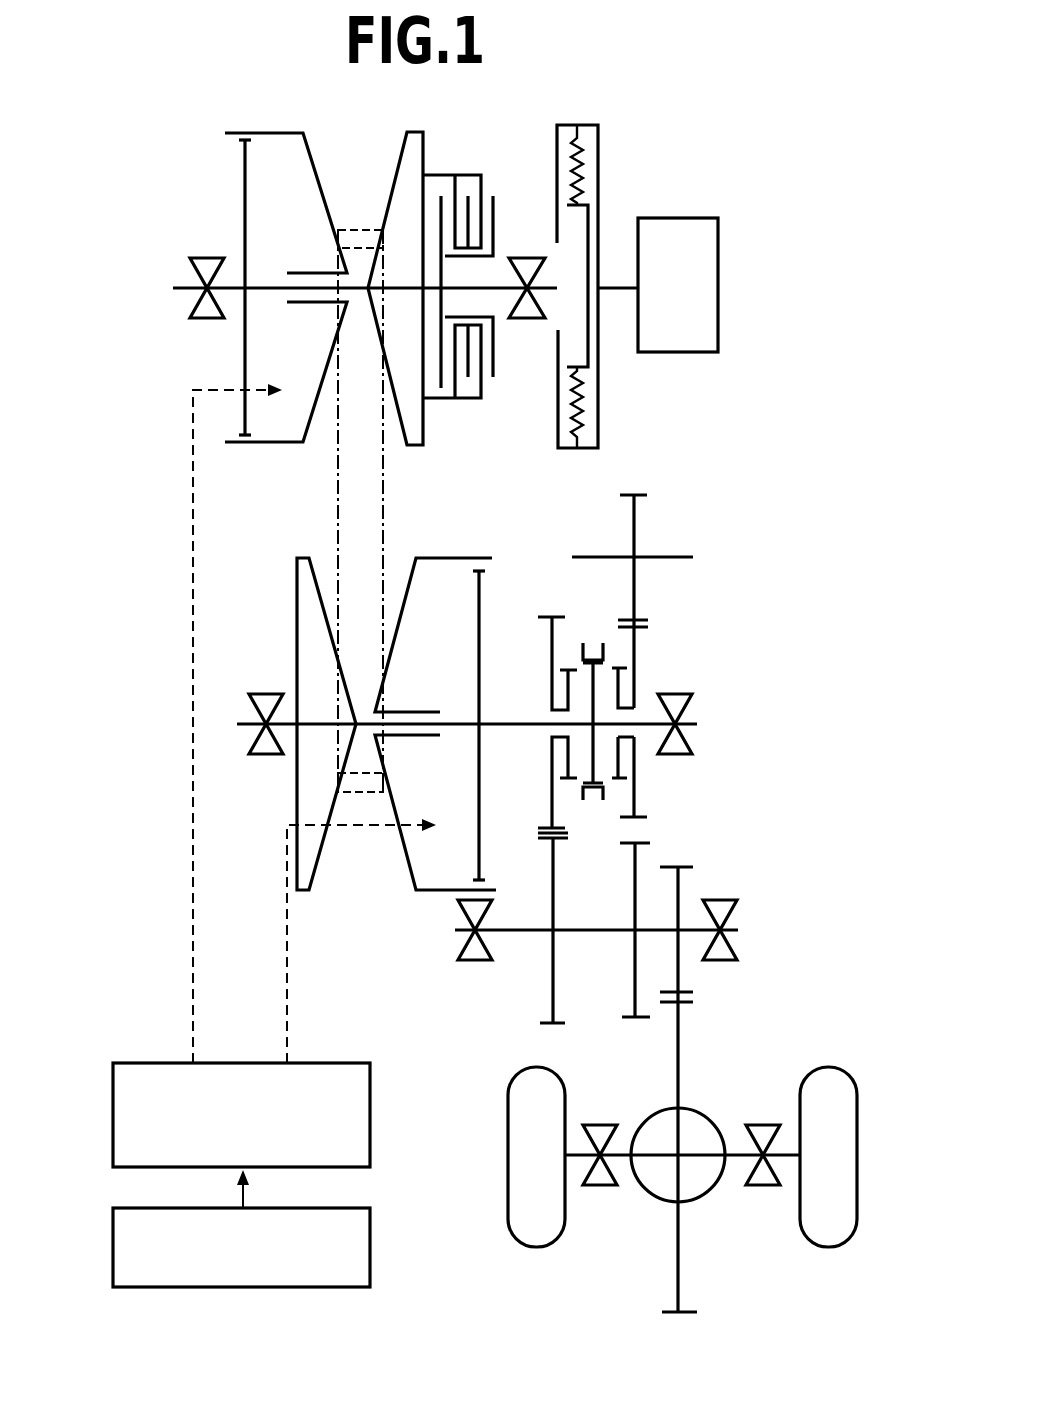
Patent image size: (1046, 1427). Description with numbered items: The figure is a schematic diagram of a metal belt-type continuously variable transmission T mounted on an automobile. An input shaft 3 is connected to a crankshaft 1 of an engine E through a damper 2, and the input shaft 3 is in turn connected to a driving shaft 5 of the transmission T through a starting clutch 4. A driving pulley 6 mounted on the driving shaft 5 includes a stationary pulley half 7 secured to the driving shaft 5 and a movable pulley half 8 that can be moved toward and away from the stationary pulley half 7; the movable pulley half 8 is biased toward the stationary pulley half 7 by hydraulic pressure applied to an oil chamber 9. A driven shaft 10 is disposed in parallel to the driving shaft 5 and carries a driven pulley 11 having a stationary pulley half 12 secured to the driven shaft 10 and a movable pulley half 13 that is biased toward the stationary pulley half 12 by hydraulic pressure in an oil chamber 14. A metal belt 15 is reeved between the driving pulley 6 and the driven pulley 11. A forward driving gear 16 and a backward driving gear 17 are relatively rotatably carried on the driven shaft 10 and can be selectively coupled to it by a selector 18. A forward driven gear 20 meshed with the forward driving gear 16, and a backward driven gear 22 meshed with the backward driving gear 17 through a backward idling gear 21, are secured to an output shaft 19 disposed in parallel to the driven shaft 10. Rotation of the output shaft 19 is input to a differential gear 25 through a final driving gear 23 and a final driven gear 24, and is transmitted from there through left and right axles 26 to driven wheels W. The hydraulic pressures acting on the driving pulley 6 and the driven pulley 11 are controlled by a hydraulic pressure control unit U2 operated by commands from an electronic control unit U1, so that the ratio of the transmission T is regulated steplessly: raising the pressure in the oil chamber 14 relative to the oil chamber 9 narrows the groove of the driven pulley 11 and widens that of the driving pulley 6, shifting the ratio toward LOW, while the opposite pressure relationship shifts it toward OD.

The crankshaft 1 is at (615, 290).
The damper 2 is at (606, 169).
The input shaft 3 is at (552, 285).
The starting clutch 4 is at (464, 173).
The driving shaft 5 is at (260, 288).
The driving pulley 6 is at (324, 263).
The stationary pulley half 7 is at (405, 167).
The movable pulley half 8 is at (310, 168).
The oil chamber 9 is at (280, 363).
The driven shaft 10 is at (528, 720).
The driven pulley 11 is at (365, 758).
The stationary pulley half 12 is at (299, 597).
The movable pulley half 13 is at (410, 593).
The oil chamber 14 is at (440, 810).
The metal belt 15 is at (387, 510).
The forward driving gear 16 is at (543, 615).
The backward driving gear 17 is at (643, 632).
The selector 18 is at (593, 795).
The output shaft 19 is at (577, 928).
The forward driven gear 20 is at (562, 1027).
The backward idling gear 21 is at (642, 495).
The backward driven gear 22 is at (628, 1023).
The final driving gear 23 is at (680, 865).
The final driven gear 24 is at (687, 1002).
The differential gear 25 is at (708, 1112).
The axles 26 is at (615, 1160).
The engine E is at (671, 299).
The metal belt-type continuously variable transmission T is at (287, 493).
The driven wheels W is at (508, 1212).
The electronic control unit U1 is at (372, 1230).
The hydraulic pressure control unit U2 is at (372, 1090).